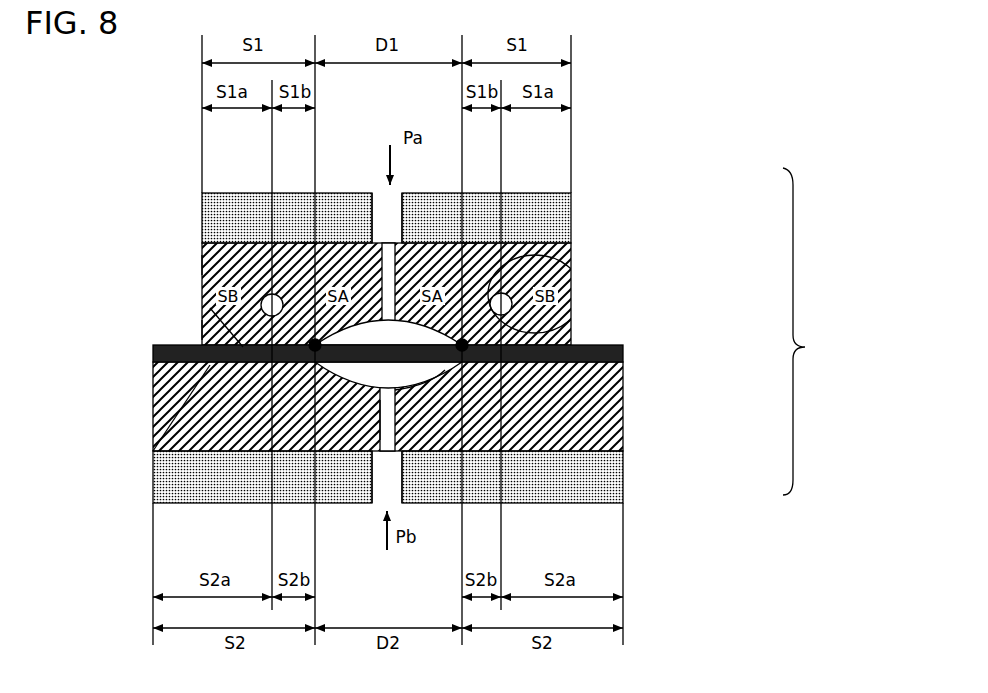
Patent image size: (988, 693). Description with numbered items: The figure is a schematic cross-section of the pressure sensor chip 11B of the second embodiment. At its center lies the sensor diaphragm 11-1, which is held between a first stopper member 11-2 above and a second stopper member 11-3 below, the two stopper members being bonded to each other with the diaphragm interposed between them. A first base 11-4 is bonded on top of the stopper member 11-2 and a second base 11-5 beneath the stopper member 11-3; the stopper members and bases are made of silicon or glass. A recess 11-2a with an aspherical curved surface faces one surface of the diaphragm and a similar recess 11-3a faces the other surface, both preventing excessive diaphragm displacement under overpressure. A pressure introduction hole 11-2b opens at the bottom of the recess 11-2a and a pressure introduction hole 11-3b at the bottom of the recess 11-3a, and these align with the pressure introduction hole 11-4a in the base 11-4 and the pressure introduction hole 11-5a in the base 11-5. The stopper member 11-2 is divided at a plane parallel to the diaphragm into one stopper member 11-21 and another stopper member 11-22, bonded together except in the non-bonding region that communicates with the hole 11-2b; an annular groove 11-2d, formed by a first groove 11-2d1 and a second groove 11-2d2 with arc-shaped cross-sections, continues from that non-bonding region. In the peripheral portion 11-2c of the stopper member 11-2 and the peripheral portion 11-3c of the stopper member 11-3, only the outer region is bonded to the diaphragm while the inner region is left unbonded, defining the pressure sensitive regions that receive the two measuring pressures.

The sensor diaphragm 11-1 is at (623, 352).
The first stopper member 11-2 is at (571, 263).
The recess 11-2a is at (462, 243).
The pressure introduction hole 11-2b is at (315, 243).
The peripheral portion 11-2c is at (210, 308).
The annular groove 11-2d is at (265, 297).
The first groove 11-2d1 is at (570, 252).
The second groove 11-2d2 is at (571, 322).
The one stopper member 11-21 is at (212, 265).
The other stopper member 11-22 is at (205, 330).
The second stopper member 11-3 is at (625, 393).
The recess 11-3a is at (408, 372).
The pressure introduction hole 11-3b is at (385, 418).
The peripheral portion 11-3c is at (153, 451).
The first base 11-4 is at (548, 216).
The pressure introduction hole 11-4a is at (385, 203).
The second base 11-5 is at (625, 487).
The pressure introduction hole 11-5a is at (378, 490).
The pressure sensor chip 11B is at (815, 331).